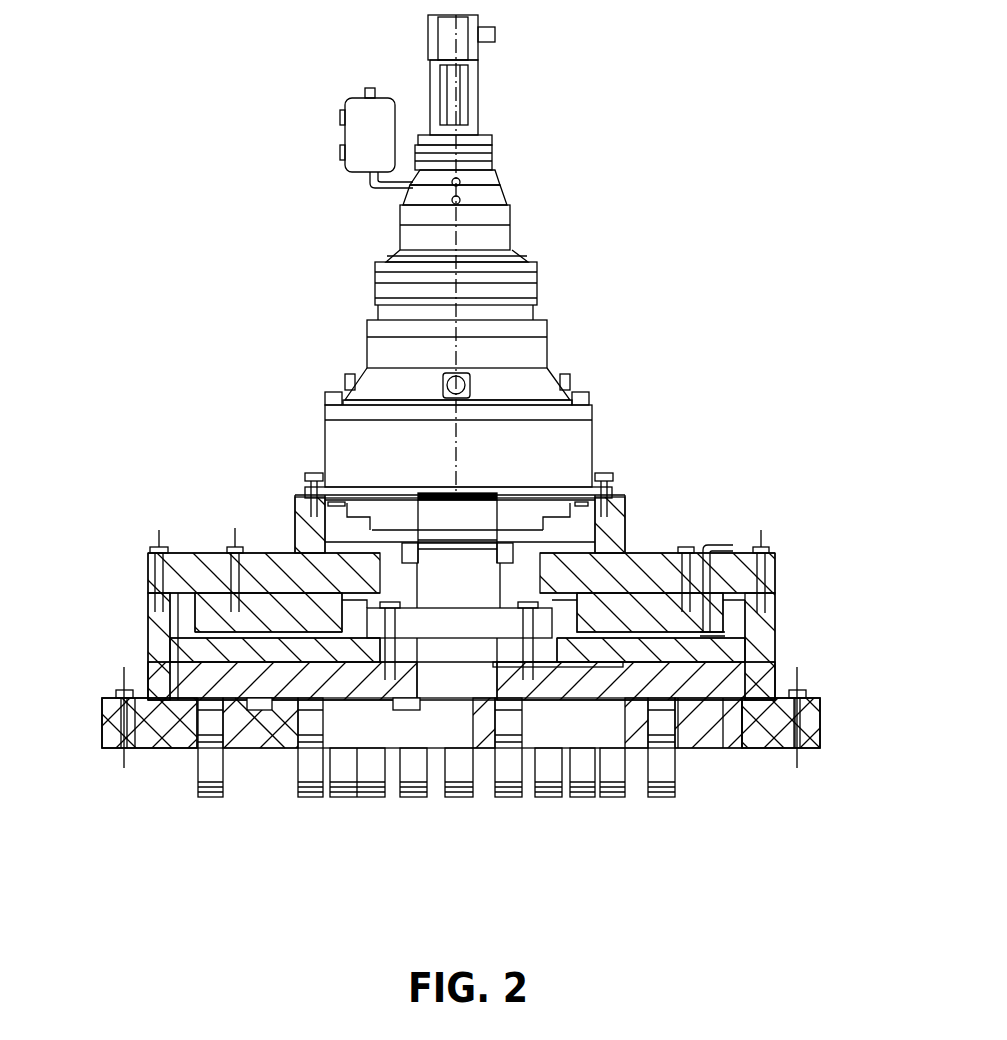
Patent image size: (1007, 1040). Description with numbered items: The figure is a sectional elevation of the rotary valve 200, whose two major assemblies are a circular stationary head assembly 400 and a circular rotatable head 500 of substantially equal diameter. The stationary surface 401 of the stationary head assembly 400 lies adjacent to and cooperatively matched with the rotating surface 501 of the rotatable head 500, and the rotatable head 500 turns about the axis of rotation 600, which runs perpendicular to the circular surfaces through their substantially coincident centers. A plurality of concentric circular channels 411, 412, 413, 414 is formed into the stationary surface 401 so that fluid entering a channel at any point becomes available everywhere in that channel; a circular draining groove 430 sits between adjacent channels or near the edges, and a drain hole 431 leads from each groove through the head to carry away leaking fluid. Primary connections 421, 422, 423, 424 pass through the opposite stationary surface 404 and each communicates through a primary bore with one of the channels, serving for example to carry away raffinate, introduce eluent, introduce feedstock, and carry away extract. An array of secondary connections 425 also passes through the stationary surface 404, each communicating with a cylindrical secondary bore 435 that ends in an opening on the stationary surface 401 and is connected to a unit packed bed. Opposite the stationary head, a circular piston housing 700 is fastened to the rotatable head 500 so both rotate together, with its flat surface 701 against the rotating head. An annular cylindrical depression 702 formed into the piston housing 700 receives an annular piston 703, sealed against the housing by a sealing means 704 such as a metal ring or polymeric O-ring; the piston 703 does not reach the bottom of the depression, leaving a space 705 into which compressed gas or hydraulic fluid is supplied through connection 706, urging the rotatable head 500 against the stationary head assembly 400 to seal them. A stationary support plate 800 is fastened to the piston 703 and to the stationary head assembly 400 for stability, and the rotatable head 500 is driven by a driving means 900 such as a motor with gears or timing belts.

The rotary valve 200 is at (113, 657).
The stationary head assembly 400 is at (192, 693).
The stationary surface 401 is at (182, 705).
The stationary surface 404 is at (265, 728).
The concentric circular channel 411 is at (740, 697).
The concentric circular channel 412 is at (687, 752).
The concentric circular channel 413 is at (573, 797).
The concentric circular channel 414 is at (524, 745).
The primary connection 421 is at (207, 792).
The primary connection 422 is at (677, 798).
The primary connection 423 is at (358, 775).
The primary connection 424 is at (512, 797).
The secondary connection 425 is at (300, 792).
The circular draining groove 430 is at (803, 752).
The drain hole 431 is at (737, 740).
The cylindrical secondary bore 435 is at (290, 746).
The rotatable head 500 is at (193, 672).
The rotating surface 501 is at (252, 655).
The axis of rotation 600 is at (458, 500).
The piston housing 700 is at (735, 650).
The flat surface 701 is at (197, 615).
The annular cylindrical depression 702 is at (267, 623).
The annular piston 703 is at (297, 608).
The sealing means 704 is at (583, 615).
The space 705 is at (232, 608).
The connection 706 is at (737, 543).
The stationary support plate 800 is at (779, 552).
The driving means 900 is at (537, 247).